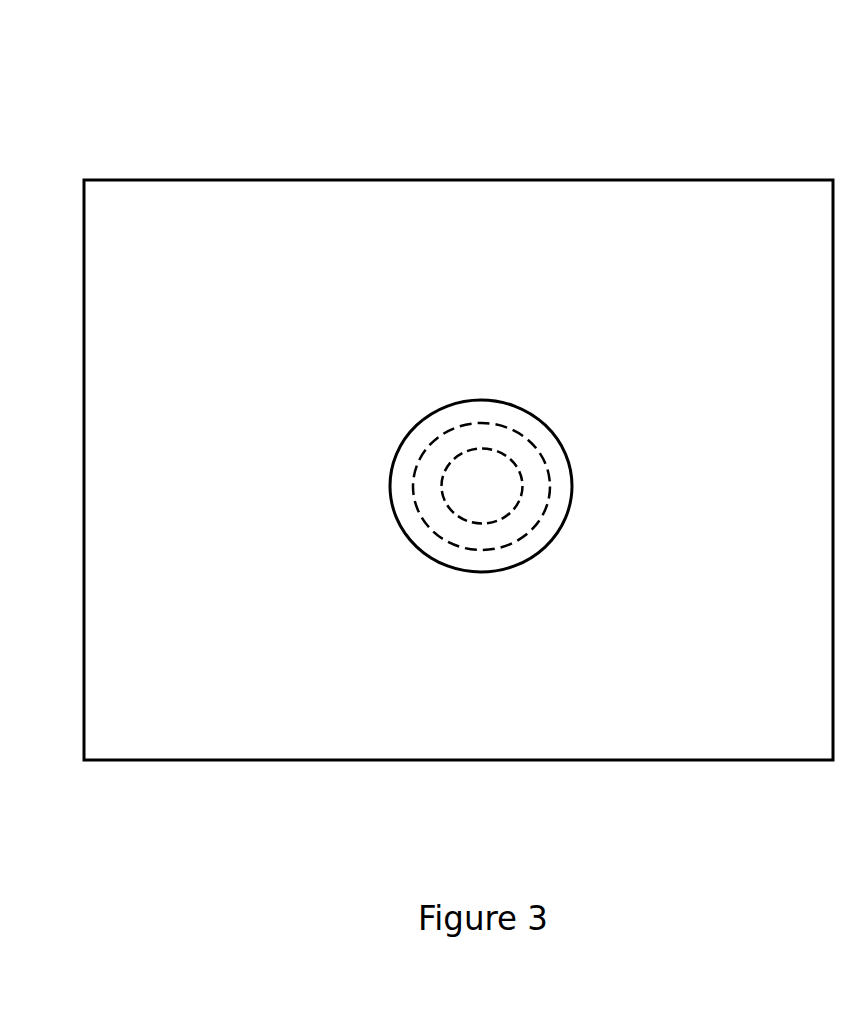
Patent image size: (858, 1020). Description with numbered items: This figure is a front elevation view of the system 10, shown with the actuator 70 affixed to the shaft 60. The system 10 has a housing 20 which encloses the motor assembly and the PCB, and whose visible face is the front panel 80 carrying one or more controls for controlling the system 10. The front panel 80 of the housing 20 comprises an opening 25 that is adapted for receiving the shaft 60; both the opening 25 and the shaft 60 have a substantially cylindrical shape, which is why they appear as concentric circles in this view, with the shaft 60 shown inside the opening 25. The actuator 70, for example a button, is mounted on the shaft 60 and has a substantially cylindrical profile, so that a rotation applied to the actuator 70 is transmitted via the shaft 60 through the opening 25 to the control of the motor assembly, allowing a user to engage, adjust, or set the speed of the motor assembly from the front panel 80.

The system 10 is at (54, 46).
The housing 20 is at (307, 180).
The opening 25 is at (415, 467).
The shaft 60 is at (475, 447).
The actuator 70 is at (565, 447).
The front panel 80 is at (133, 742).